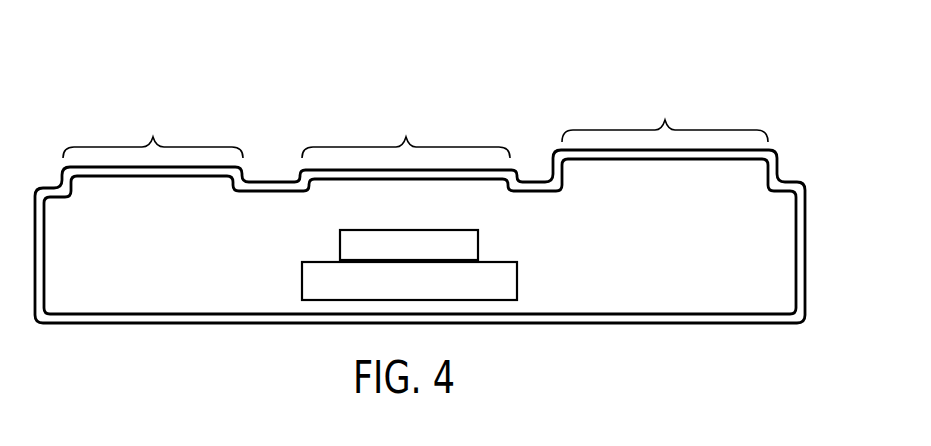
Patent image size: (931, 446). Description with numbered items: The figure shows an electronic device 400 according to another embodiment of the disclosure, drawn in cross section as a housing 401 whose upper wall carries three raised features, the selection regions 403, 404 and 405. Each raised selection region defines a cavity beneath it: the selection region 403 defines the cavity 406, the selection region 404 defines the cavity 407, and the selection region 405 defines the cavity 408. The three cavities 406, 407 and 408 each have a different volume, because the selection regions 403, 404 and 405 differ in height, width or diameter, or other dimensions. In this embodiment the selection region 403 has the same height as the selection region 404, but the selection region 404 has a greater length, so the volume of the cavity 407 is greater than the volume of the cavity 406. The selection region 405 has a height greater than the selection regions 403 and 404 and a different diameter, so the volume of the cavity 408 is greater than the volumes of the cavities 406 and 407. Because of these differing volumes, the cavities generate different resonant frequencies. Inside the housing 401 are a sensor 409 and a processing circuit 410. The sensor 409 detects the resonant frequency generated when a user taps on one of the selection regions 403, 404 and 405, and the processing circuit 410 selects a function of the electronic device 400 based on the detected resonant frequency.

The electronic device 400 is at (760, 69).
The housing 401 is at (798, 183).
The selection region 403 is at (153, 133).
The selection region 404 is at (406, 134).
The selection region 405 is at (665, 116).
The cavity 406 is at (148, 190).
The cavity 407 is at (415, 188).
The cavity 408 is at (670, 173).
The sensor 409 is at (478, 243).
The processing circuit 410 is at (517, 283).